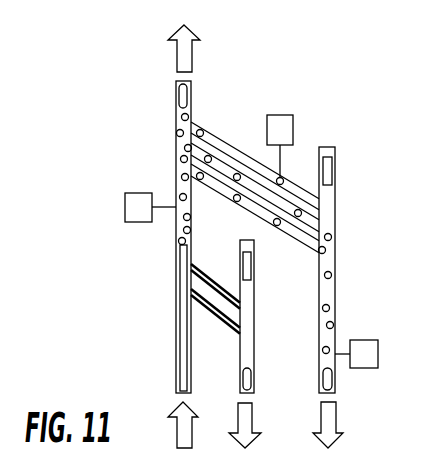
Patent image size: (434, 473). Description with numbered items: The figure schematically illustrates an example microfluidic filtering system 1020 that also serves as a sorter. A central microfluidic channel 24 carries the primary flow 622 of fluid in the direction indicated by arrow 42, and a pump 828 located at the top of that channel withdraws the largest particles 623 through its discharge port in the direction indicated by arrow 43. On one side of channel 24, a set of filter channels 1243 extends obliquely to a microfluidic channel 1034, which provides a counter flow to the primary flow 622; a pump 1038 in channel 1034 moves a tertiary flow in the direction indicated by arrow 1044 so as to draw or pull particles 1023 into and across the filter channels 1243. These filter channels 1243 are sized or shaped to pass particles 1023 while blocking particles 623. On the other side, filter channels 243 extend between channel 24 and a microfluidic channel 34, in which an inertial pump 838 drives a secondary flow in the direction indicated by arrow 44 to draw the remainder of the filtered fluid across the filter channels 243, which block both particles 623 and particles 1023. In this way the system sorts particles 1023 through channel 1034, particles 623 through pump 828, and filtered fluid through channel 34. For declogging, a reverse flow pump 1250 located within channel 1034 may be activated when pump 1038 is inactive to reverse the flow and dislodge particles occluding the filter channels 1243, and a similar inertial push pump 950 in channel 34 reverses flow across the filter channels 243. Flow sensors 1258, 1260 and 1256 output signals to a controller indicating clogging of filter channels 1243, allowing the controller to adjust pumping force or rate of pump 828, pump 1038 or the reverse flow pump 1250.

The microfluidic filtering system 1020 is at (157, 92).
The microfluidic channel 24 is at (176, 165).
The pump 828 is at (178, 90).
The particles 623 is at (192, 116).
The primary flow 622 is at (176, 345).
The filter channels 1243 is at (231, 145).
The particles 1023 is at (235, 198).
The microfluidic channel 1034 is at (360, 271).
The pump 1038 is at (333, 178).
The reverse flow pump 1250 is at (333, 383).
The microfluidic channel 34 is at (254, 291).
The inertial pump 838 is at (254, 262).
The inertial push pump 950 is at (252, 378).
The filter channels 243 is at (217, 264).
The flow sensor 1258 is at (140, 222).
The flow sensor 1260 is at (293, 128).
The flow sensor 1256 is at (363, 340).
The arrow 43 is at (193, 55).
The arrow 42 is at (168, 428).
The arrow 44 is at (261, 419).
The arrow 1044 is at (343, 422).